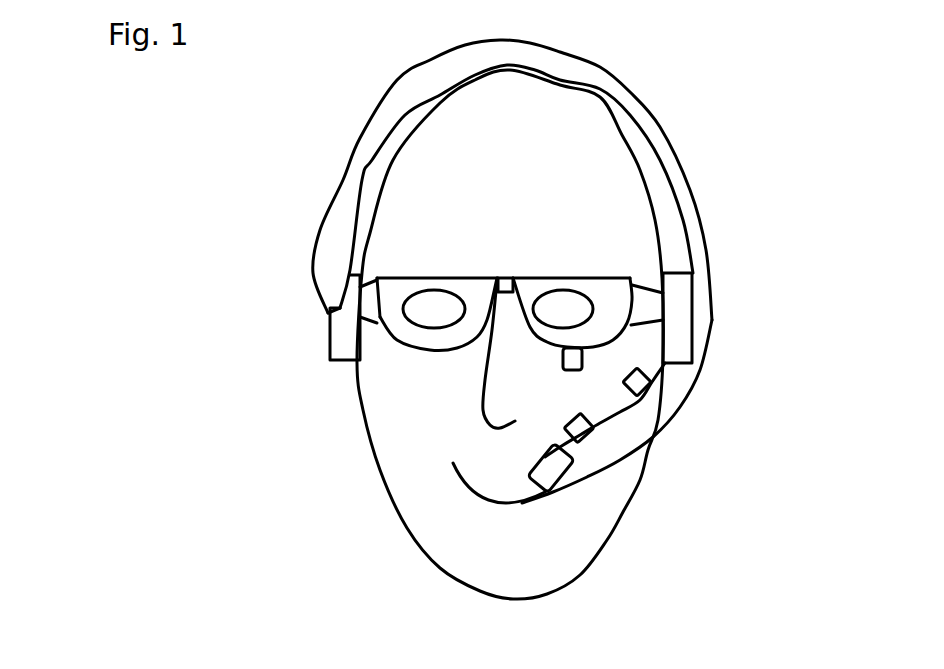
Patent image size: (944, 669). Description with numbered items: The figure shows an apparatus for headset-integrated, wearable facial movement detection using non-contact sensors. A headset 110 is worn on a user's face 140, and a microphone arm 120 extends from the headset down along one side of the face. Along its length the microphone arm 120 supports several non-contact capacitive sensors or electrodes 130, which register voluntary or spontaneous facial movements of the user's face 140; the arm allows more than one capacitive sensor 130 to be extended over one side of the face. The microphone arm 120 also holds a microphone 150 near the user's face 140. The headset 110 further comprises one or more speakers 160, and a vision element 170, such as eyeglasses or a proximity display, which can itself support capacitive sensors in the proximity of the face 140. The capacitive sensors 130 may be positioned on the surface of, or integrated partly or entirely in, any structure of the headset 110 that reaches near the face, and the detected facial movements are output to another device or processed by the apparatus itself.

The headset 110 is at (643, 38).
The microphone arm 120 is at (590, 463).
The capacitive sensors 130 is at (583, 357).
The user's face 140 is at (427, 557).
The microphone 150 is at (542, 480).
The speakers 160 is at (677, 292).
The vision element 170 is at (600, 282).